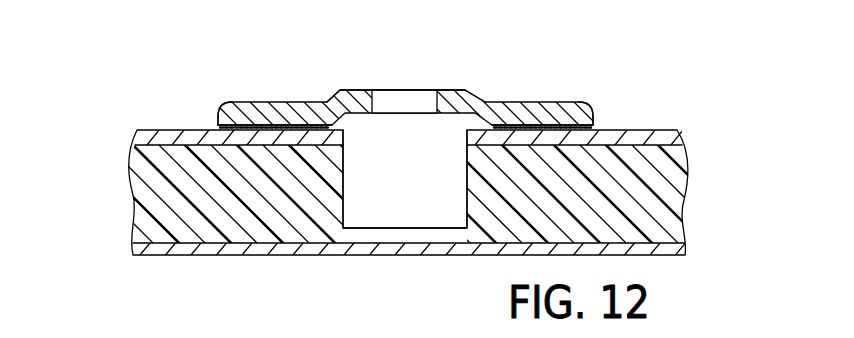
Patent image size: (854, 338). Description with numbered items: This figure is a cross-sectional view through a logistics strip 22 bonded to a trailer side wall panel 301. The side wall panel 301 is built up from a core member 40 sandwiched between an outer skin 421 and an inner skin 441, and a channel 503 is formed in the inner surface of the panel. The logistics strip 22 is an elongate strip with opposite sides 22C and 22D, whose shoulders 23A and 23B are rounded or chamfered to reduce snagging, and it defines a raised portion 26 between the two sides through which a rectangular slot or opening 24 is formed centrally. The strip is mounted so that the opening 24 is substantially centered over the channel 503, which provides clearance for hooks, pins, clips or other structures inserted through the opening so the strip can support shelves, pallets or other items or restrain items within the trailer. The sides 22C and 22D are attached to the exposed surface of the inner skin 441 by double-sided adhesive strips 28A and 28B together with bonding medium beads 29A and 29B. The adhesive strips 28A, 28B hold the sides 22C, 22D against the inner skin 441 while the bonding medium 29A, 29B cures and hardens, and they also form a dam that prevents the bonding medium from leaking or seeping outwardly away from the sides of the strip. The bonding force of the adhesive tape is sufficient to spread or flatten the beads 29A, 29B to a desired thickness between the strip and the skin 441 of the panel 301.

The logistics strip 22 is at (423, 72).
The side of the logistics strip 22C is at (595, 121).
The side of the logistics strip 22D is at (217, 125).
The shoulder 23A is at (232, 104).
The shoulder 23B is at (583, 100).
The slot or opening 24 is at (398, 90).
The raised portion 26 is at (352, 90).
The double-sided adhesive strip 28A is at (603, 127).
The double-sided adhesive strip 28B is at (217, 128).
The bonding medium bead 29A is at (505, 125).
The bonding medium bead 29B is at (265, 126).
The side wall panel 301 is at (403, 169).
The core member 40 is at (688, 177).
The outer skin 421 is at (233, 256).
The inner skin 441 is at (712, 110).
The channel 503 is at (418, 203).